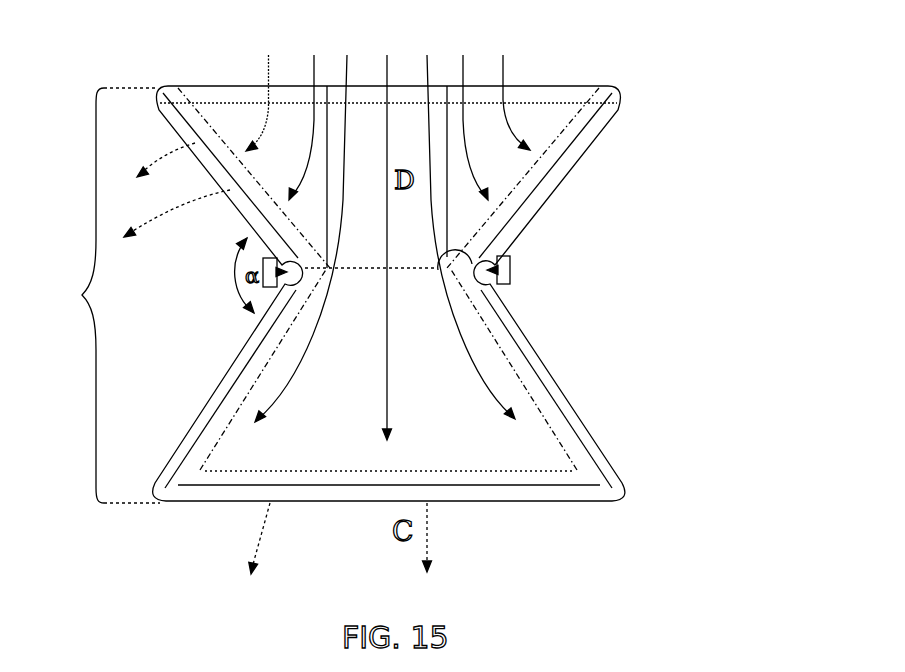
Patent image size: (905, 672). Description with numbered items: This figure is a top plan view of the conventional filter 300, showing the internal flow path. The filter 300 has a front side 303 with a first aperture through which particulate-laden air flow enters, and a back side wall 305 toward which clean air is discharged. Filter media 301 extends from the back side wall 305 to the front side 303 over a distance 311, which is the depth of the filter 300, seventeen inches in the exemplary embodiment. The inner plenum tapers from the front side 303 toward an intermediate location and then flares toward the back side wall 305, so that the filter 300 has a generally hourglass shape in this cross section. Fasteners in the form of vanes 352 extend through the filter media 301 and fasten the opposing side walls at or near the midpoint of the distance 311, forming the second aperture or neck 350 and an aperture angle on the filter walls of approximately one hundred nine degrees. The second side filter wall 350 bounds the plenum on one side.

The filter 300 is at (580, 253).
The filter media 301 is at (552, 122).
The front side 303 is at (524, 86).
The back side wall 305 is at (234, 503).
The distance 311 is at (102, 295).
The second side filter wall 350 is at (525, 428).
The vanes 352 is at (510, 276).